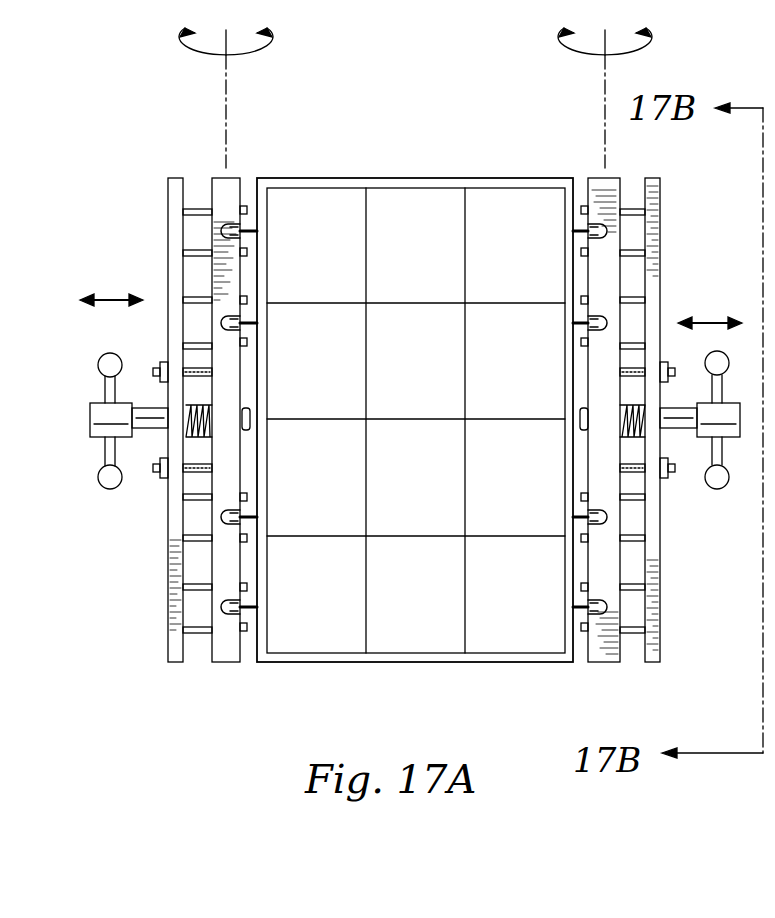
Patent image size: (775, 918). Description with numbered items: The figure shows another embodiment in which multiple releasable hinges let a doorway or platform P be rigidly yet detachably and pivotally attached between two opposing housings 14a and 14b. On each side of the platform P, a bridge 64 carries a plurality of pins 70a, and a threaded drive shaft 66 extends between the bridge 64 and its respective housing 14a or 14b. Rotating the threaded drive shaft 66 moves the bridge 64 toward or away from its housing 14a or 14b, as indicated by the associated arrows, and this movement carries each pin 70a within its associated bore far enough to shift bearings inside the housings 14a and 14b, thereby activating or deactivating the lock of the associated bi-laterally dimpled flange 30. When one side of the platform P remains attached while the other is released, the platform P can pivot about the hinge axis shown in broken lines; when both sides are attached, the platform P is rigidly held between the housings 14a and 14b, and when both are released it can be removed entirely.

The platform P is at (405, 178).
The housing 14a is at (220, 178).
The housing 14b is at (596, 663).
The bridge 64 is at (177, 628).
The pin 70a is at (202, 297).
The bi-laterally dimpled flange 30 is at (250, 320).
The threaded drive shaft 66 is at (203, 432).